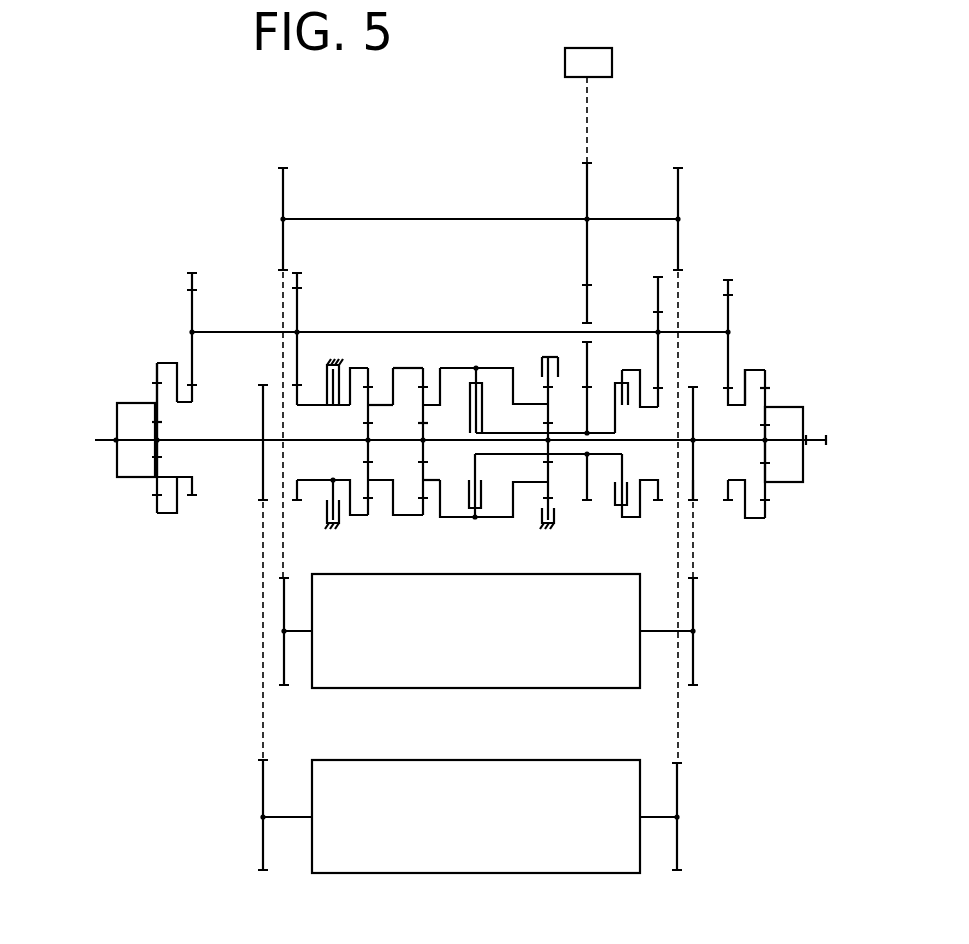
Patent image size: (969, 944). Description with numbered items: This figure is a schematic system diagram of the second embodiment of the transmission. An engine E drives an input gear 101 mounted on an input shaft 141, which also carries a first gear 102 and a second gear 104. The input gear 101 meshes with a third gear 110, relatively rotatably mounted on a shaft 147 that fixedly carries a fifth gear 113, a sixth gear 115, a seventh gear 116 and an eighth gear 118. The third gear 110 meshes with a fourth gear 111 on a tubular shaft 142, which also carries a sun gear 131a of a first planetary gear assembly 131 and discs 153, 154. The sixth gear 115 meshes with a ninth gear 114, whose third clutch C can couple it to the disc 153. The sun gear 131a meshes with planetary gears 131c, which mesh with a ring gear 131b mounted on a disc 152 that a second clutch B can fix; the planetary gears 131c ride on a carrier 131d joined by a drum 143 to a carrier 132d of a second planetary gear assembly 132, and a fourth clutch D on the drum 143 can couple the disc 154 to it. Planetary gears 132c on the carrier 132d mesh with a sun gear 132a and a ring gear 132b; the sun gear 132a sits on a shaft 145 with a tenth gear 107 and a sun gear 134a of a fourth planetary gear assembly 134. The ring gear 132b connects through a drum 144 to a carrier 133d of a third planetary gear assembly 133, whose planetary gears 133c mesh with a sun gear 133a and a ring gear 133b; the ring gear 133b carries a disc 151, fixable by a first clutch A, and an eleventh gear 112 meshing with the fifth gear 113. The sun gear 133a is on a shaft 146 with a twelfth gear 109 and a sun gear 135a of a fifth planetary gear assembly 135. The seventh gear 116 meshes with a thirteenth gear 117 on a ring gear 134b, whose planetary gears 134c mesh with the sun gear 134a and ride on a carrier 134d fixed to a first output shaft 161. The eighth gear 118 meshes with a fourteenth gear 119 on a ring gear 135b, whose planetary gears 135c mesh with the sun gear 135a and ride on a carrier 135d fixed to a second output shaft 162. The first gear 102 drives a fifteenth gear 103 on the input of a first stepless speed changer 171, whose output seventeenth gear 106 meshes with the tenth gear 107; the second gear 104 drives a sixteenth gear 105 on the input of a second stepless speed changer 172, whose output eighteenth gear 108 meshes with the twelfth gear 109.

The engine E is at (612, 60).
The input gear 101 is at (585, 183).
The first gear 102 is at (288, 183).
The 15th gear 103 is at (283, 665).
The second gear 104 is at (680, 190).
The 16th gear 105 is at (680, 843).
The 17th gear 106 is at (695, 663).
The tenth gear 107 is at (696, 482).
The 18th gear 108 is at (262, 843).
The 12th gear 109 is at (262, 490).
The third gear 110 is at (589, 290).
The fourth gear 111 is at (586, 472).
The 11th gear 112 is at (321, 392).
The fifth gear 113 is at (299, 288).
The ninth gear 114 is at (659, 397).
The sixth gear 115 is at (656, 311).
The seventh gear 116 is at (730, 295).
The 13th gear 117 is at (727, 403).
The eighth gear 118 is at (194, 290).
The 14th gear 119 is at (198, 385).
The first planetary gear assembly 131 is at (570, 538).
The sun gear 131a is at (551, 428).
The ring gear 131b is at (553, 380).
The planetary gears 131c is at (542, 393).
The carrier 131d is at (527, 478).
The second planetary gear assembly 132 is at (440, 535).
The sun gear 132a is at (421, 438).
The ring gear 132b is at (424, 370).
The planetary gears 132c is at (425, 424).
The carrier 132d is at (424, 462).
The third planetary gear assembly 133 is at (383, 535).
The sun gear 133a is at (366, 424).
The ring gear 133b is at (368, 370).
The planetary gears 133c is at (369, 423).
The carrier 133d is at (380, 478).
The fourth planetary gear assembly 134 is at (785, 541).
The sun gear 134a is at (767, 445).
The ring gear 134b is at (760, 370).
The planetary gears 134c is at (767, 388).
The carrier 134d is at (788, 407).
The fifth planetary gear assembly 135 is at (172, 535).
The sun gear 135a is at (163, 424).
The ring gear 135b is at (170, 362).
The planetary gears 135c is at (157, 378).
The carrier 135d is at (118, 404).
The input shaft 141 is at (447, 219).
The tubular shaft 142 is at (603, 428).
The drum 143 is at (489, 519).
The drum 144 is at (408, 368).
The shaft 145 is at (696, 445).
The shaft 146 is at (185, 442).
The shaft 147 is at (387, 331).
The disc 151 is at (326, 500).
The disc 152 is at (557, 518).
The disc 153 is at (628, 462).
The disc 154 is at (482, 420).
The first output shaft 161 is at (817, 445).
The second output shaft 162 is at (105, 446).
The first stepless speed changer 171 is at (428, 690).
The second stepless speed changer 172 is at (433, 875).
The first clutch A is at (333, 356).
The second clutch B is at (541, 352).
The third clutch C is at (615, 388).
The fourth clutch D is at (483, 370).